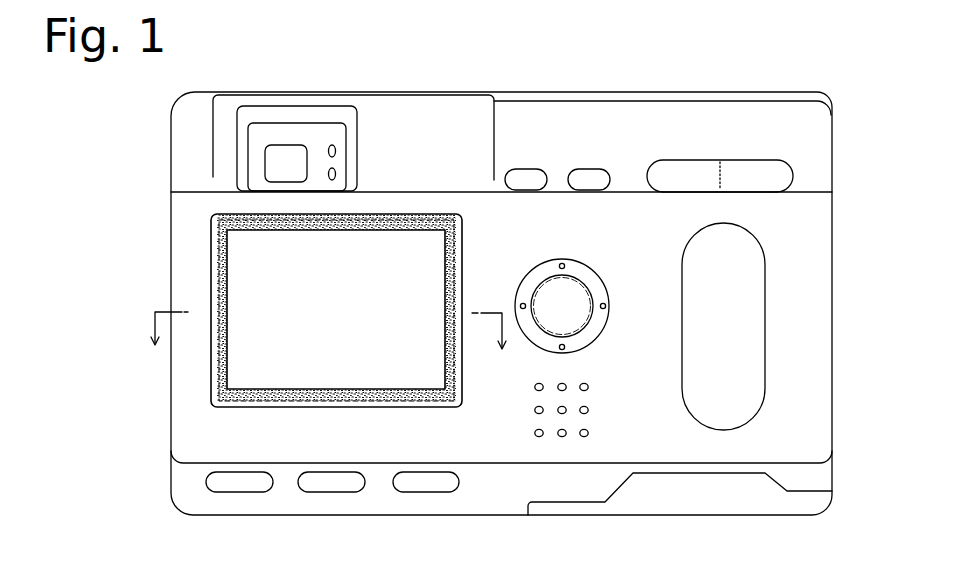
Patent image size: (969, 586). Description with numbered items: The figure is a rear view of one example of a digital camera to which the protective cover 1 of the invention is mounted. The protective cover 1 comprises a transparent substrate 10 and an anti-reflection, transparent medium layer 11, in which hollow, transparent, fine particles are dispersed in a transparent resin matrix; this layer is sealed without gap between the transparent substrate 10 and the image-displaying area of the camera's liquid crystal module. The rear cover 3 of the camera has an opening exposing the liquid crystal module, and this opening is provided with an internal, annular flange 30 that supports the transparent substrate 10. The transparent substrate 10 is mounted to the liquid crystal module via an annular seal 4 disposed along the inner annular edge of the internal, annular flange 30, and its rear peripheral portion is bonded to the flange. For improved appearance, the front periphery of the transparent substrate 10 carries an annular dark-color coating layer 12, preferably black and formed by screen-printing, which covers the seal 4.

The protective cover 1 is at (269, 340).
The transparent substrate 10 is at (297, 257).
The anti-reflection, transparent medium layer 11 is at (289, 305).
The annular dark-color coating layer 12 is at (227, 407).
The annular seal 4 is at (272, 407).
The internal, annular flange 30 is at (363, 407).
The rear cover 3 is at (482, 445).